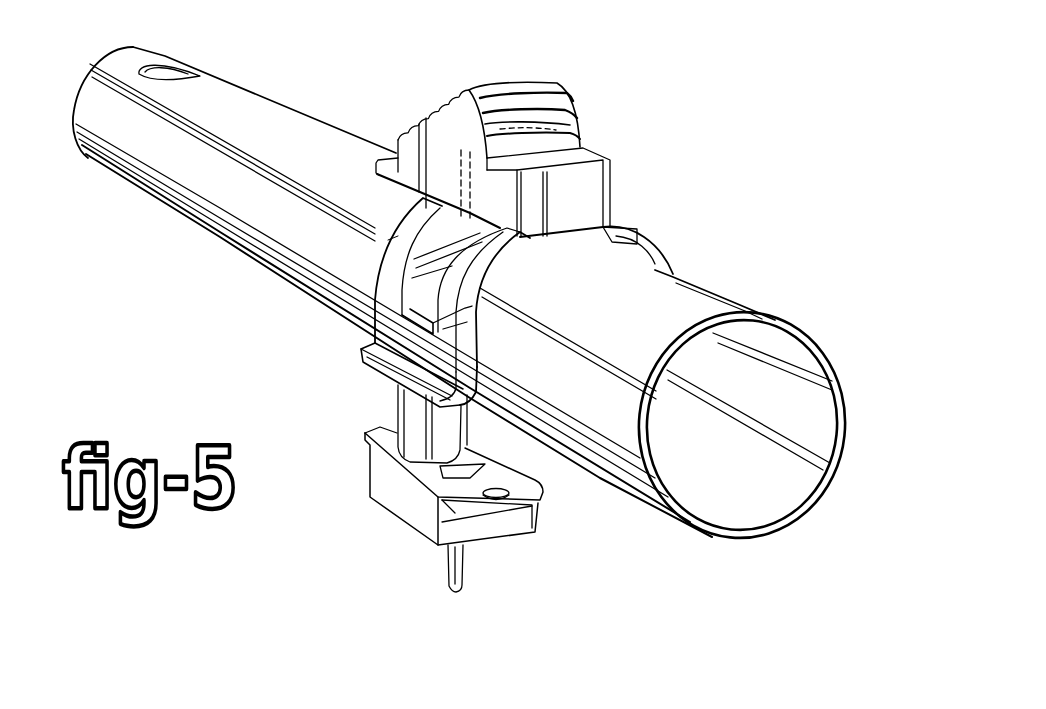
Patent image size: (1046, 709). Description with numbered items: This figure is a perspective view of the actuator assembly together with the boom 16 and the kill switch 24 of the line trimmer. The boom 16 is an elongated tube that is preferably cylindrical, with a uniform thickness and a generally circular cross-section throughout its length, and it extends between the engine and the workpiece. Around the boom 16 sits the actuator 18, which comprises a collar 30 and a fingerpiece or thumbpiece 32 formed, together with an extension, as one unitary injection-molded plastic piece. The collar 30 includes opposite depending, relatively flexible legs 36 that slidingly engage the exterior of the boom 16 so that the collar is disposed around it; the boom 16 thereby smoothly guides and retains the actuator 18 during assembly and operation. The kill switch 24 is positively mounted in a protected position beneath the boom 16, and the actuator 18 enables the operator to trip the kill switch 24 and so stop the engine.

The boom 16 is at (292, 108).
The actuator 18 is at (627, 117).
The kill switch 24 is at (413, 502).
The collar 30 is at (496, 330).
The thumbpiece 32 is at (492, 84).
The legs 36 is at (393, 262).